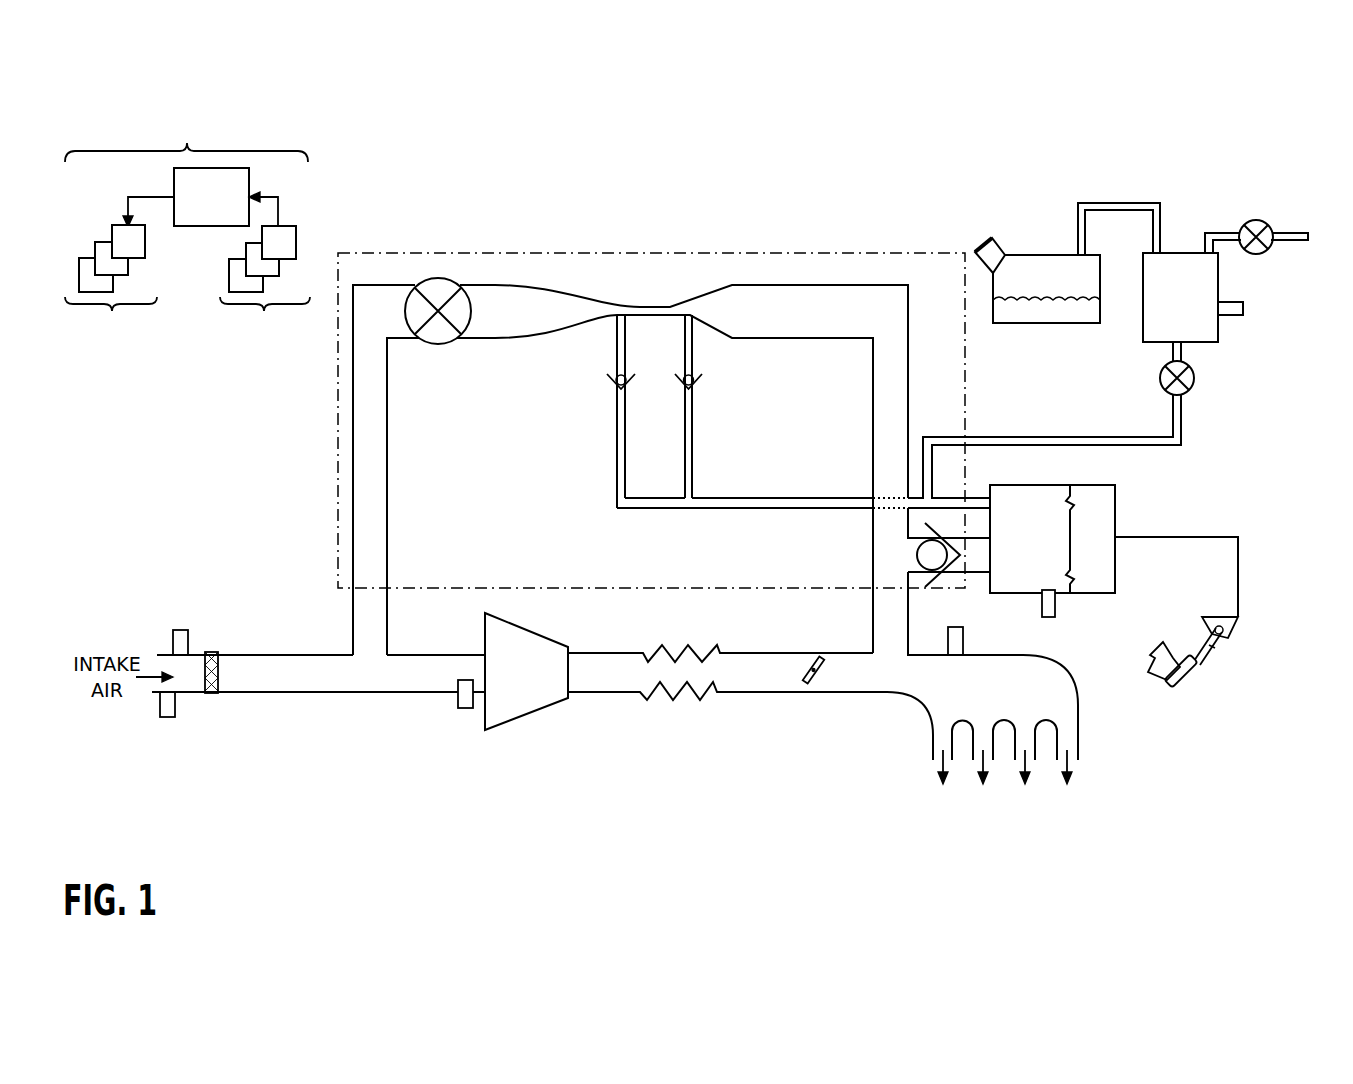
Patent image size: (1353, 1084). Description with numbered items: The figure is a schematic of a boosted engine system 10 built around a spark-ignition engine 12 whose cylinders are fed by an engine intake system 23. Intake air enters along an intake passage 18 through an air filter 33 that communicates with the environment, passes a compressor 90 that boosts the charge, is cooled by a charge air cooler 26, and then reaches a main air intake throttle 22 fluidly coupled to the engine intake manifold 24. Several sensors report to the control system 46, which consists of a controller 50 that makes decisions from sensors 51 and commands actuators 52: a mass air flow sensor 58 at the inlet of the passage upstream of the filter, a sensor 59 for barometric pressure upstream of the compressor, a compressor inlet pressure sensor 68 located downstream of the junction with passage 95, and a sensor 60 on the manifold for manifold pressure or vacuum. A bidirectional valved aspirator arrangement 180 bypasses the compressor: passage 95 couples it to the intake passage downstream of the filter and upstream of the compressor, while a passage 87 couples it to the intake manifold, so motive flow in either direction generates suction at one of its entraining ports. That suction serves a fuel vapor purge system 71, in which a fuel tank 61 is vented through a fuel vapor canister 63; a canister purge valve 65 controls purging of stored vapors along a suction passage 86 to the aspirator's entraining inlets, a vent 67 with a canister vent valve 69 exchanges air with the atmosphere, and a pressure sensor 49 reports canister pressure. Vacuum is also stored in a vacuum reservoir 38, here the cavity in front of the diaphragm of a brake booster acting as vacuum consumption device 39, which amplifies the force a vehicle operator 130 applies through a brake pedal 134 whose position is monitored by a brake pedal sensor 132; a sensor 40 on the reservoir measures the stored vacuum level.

The engine system 10 is at (1216, 853).
The engine 12 is at (1113, 756).
The intake passage 18 is at (400, 694).
The main air intake throttle 22 is at (808, 684).
The engine intake system 23 is at (599, 765).
The engine intake manifold 24 is at (982, 690).
The charge air cooler 26 is at (677, 700).
The air filter 33 is at (212, 694).
The vacuum reservoir 38 is at (1011, 539).
The vacuum consumption device 39 is at (1152, 551).
The sensor 40 is at (1043, 618).
The control system 46 is at (186, 124).
The pressure sensor 49 is at (1246, 316).
The controller 50 is at (211, 197).
The sensors 51 is at (264, 280).
The actuators 52 is at (114, 282).
The mass air flow sensor 58 is at (182, 630).
The sensor 59 is at (168, 718).
The sensor 60 is at (963, 640).
The fuel tank 61 is at (1052, 254).
The fuel vapor canister 63 is at (1148, 272).
The canister purge valve 65 is at (1165, 383).
The vent 67 is at (1298, 242).
The compressor inlet pressure sensor 68 is at (462, 709).
The canister vent valve 69 is at (1262, 255).
The fuel vapor purge system 71 is at (1268, 168).
The suction passage 86 is at (1153, 446).
The passage 87 is at (907, 646).
The compressor 90 is at (477, 671).
The passage 95 is at (352, 636).
The vehicle operator 130 is at (1155, 658).
The brake pedal sensor 132 is at (1212, 630).
The brake pedal 134 is at (1198, 675).
The bidirectional valved aspirator arrangement 180 is at (819, 247).